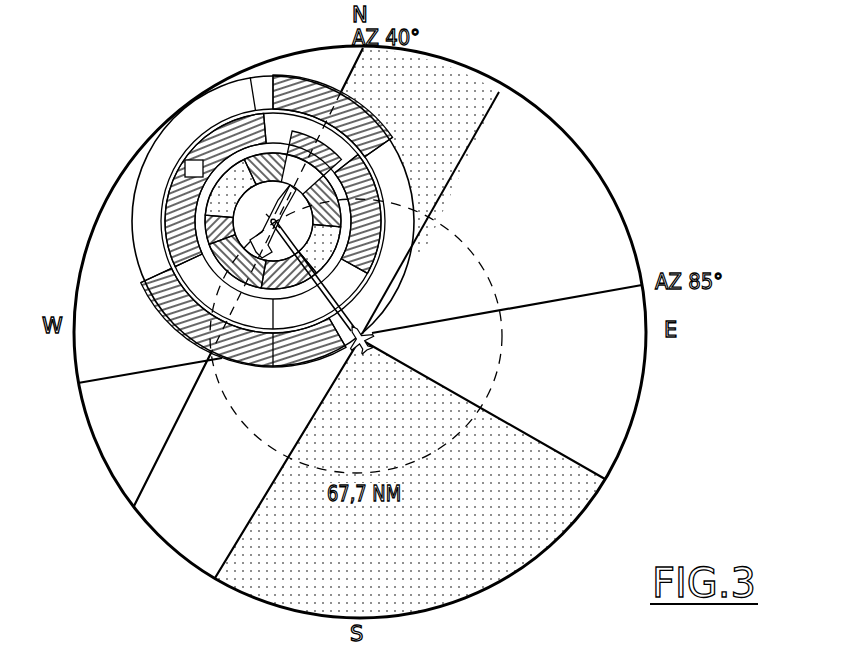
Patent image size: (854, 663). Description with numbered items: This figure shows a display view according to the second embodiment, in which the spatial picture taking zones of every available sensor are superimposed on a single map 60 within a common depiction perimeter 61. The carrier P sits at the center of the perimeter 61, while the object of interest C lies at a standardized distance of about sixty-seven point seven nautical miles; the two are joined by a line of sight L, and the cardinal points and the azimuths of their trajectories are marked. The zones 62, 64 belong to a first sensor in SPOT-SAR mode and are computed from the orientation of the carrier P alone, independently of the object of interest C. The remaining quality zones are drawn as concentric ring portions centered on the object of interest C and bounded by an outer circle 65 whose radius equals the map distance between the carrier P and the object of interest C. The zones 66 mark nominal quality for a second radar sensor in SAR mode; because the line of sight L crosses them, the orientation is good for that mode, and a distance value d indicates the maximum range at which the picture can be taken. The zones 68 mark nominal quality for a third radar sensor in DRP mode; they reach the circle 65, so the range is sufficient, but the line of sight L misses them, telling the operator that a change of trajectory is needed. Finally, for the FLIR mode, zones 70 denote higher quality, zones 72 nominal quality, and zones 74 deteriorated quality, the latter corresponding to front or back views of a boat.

The map 60 is at (379, 327).
The depiction perimeter 61 is at (638, 243).
The zone associated with first sensor 62 is at (465, 102).
The zone associated with first sensor 64 is at (518, 128).
The outer circle 65 is at (256, 192).
The nominal picture taking zones of second sensor 66 is at (163, 229).
The nominal picture taking zones of third sensor 68 is at (414, 120).
The higher quality zones of fourth mode 70 is at (230, 180).
The nominal quality zones of fourth mode 72 is at (262, 166).
The deteriorated quality zones of fourth mode 74 is at (302, 170).
The distance value d is at (184, 164).
The object of interest C is at (166, 279).
The carrier P is at (352, 344).
The line of sight L is at (382, 314).